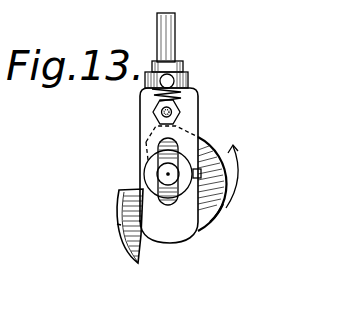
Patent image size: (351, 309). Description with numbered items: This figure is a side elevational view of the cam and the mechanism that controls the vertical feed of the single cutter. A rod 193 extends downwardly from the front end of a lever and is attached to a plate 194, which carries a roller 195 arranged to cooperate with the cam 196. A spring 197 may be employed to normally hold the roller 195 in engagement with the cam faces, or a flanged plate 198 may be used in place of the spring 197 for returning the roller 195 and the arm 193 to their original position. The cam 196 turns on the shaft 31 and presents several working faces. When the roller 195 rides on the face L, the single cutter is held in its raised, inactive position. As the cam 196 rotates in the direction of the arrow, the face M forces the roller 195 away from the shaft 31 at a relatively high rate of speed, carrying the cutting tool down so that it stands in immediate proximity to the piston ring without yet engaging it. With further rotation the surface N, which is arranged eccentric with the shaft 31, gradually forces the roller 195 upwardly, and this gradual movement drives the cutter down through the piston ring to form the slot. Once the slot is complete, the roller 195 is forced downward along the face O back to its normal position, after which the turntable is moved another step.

The rod 193 is at (175, 42).
The spring 197 is at (170, 93).
The roller 195 is at (182, 112).
The shaft 31 is at (168, 174).
The cam surface N is at (228, 185).
The cam 196 is at (212, 216).
The plate 194 is at (181, 234).
The flanged plate 198 is at (132, 262).
The cam face O is at (117, 224).
The cam face L is at (144, 168).
The cam face M is at (146, 142).